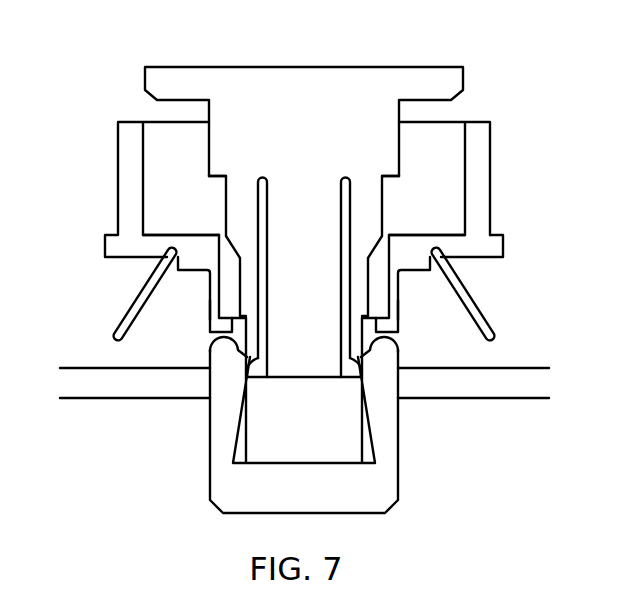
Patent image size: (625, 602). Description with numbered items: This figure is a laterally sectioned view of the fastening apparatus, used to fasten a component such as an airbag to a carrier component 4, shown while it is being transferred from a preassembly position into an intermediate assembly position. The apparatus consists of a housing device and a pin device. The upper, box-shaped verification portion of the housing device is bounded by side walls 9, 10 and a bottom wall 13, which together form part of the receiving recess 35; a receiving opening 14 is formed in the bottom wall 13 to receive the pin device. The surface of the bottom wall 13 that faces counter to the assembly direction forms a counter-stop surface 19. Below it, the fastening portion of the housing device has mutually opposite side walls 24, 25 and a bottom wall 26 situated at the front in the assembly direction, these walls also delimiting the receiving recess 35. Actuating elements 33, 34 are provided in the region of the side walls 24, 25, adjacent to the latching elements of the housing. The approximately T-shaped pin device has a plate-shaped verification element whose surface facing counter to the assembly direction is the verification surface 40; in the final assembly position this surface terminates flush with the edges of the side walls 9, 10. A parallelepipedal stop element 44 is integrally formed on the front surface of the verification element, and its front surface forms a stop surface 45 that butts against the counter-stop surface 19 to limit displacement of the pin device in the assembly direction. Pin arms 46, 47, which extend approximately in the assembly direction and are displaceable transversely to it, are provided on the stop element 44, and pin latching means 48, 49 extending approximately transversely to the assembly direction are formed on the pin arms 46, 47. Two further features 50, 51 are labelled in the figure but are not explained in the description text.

The carrier component 4 is at (537, 382).
The side wall 9 is at (480, 122).
The side wall 10 is at (130, 122).
The bottom wall 13 is at (449, 236).
The receiving opening 14 is at (244, 262).
The counter-stop surface 19 is at (177, 234).
The side wall 24 is at (210, 326).
The side wall 25 is at (398, 326).
The bottom wall 26 is at (227, 502).
The actuating element 33 is at (394, 345).
The actuating element 34 is at (213, 354).
The receiving recess 35 is at (376, 458).
The verification surface 40 is at (312, 67).
The stop element 44 is at (320, 178).
The stop surface 45 is at (210, 186).
The pin arm 46 is at (366, 270).
The pin arm 47 is at (248, 268).
The pin latching means 48 is at (367, 318).
The pin latching means 49 is at (241, 318).
The second recess 50 is at (398, 310).
The first recess 51 is at (215, 312).